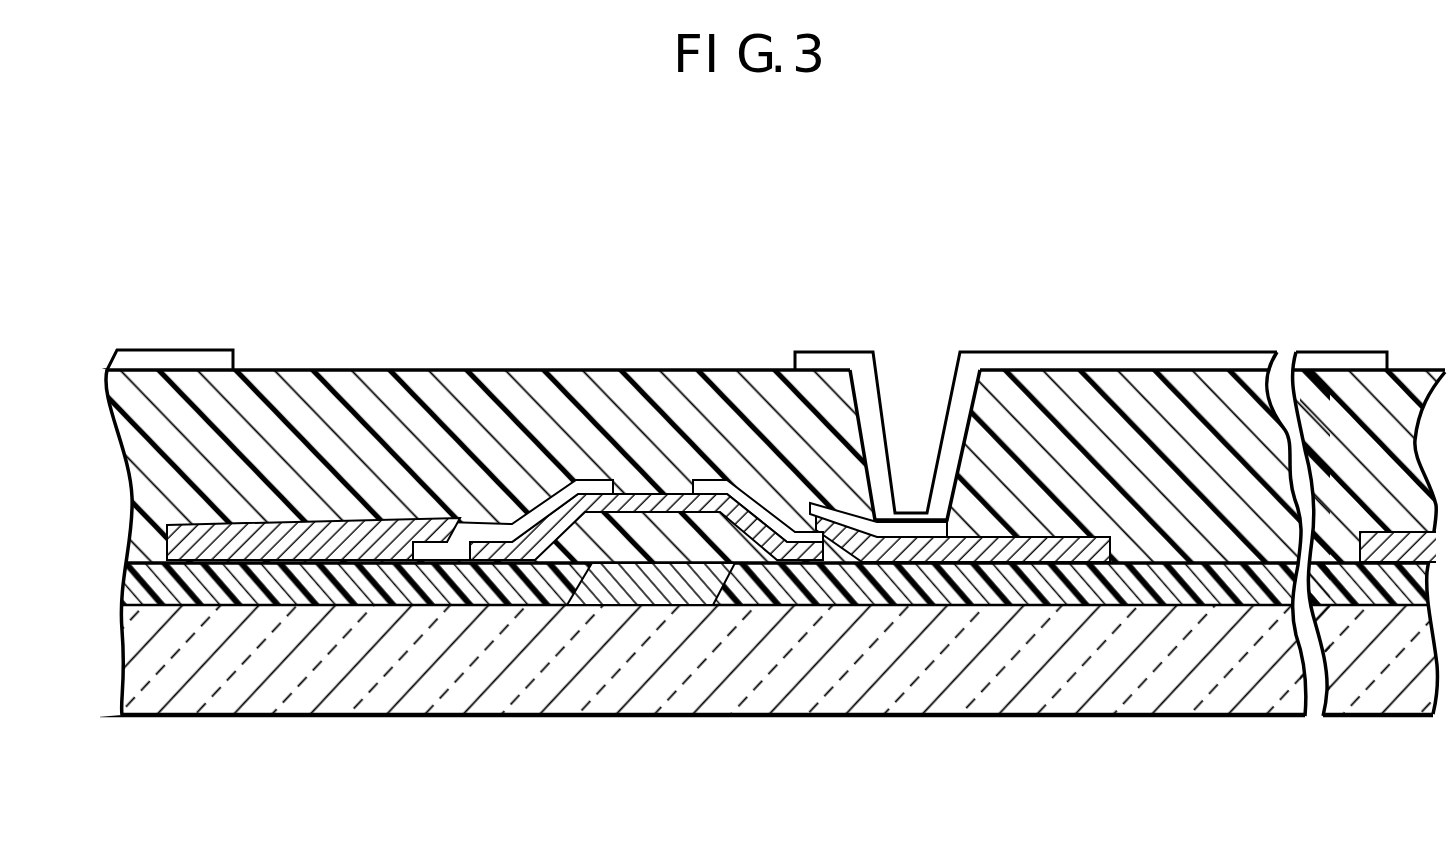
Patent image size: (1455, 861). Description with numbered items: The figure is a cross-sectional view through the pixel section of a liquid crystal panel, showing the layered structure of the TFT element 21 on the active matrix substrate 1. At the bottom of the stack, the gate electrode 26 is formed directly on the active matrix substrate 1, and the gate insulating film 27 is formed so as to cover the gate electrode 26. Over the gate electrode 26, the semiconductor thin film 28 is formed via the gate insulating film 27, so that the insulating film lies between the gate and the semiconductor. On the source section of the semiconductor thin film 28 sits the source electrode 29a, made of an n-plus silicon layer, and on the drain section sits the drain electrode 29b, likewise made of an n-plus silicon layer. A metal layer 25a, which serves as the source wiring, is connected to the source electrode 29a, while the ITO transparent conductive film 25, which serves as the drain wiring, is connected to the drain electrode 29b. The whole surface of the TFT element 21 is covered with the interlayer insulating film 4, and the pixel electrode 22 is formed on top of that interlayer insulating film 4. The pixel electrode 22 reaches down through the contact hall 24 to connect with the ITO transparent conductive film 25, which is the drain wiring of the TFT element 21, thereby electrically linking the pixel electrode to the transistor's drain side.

The active matrix substrate 1 is at (772, 667).
The interlayer insulating film 4 is at (293, 412).
The TFT element 21 is at (680, 385).
The pixel electrode 22 is at (1062, 363).
The contact hall 24 is at (917, 388).
The ITO transparent conductive film 25 is at (1047, 545).
The metal layer 25a is at (340, 525).
The gate electrode 26 is at (651, 588).
The gate insulating film 27 is at (940, 588).
The semiconductor thin film 28 is at (641, 490).
The source electrode 29a is at (500, 523).
The drain electrode 29b is at (753, 505).